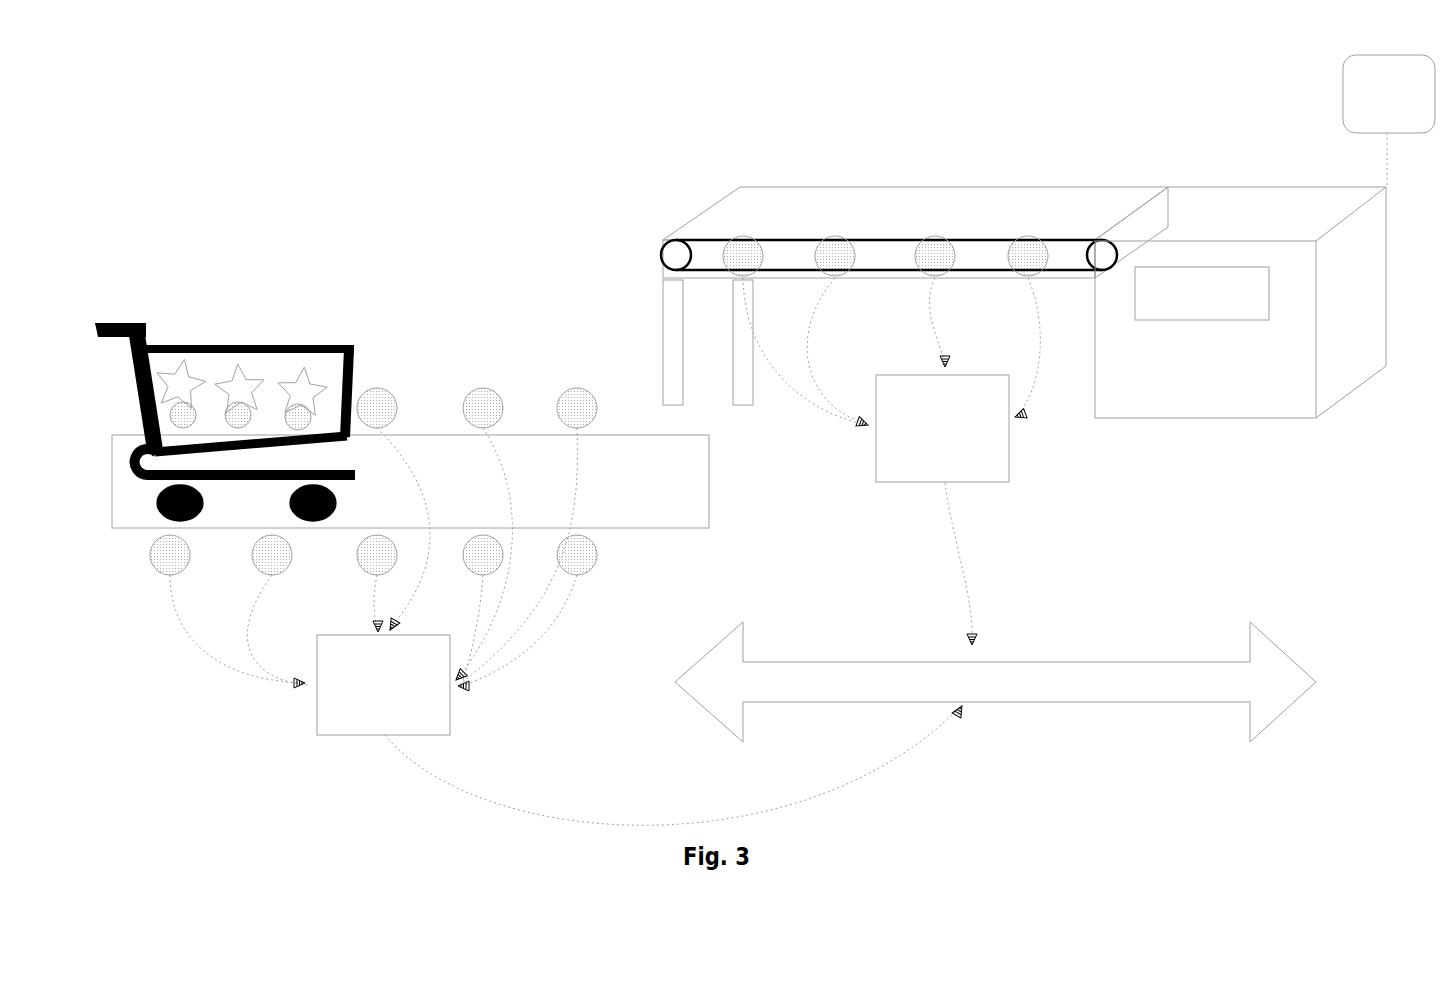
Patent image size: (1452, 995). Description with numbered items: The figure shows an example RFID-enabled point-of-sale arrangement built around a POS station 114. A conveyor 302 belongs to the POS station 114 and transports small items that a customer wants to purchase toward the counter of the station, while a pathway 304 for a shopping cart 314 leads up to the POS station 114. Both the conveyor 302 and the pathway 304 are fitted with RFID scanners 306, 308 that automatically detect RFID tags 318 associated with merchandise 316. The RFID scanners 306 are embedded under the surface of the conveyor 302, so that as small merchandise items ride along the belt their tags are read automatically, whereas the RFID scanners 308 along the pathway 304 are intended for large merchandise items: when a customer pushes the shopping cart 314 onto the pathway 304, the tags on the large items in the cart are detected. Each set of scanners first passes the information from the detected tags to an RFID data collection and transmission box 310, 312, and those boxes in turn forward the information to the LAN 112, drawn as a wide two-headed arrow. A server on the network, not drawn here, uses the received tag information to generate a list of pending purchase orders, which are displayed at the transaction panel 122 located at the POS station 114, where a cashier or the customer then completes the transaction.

The LAN 112 is at (850, 654).
The POS station 114 is at (1240, 347).
The transaction panel 122 is at (1396, 129).
The conveyor 302 is at (914, 226).
The pathway 304 is at (451, 481).
The RFID scanners 306 is at (885, 296).
The RFID scanners 308 is at (373, 438).
The RFID data collection and transmission box 310 is at (891, 380).
The RFID data collection and transmission box 312 is at (373, 581).
The shopping cart 314 is at (225, 378).
The merchandise 316 is at (267, 358).
The RFID tags 318 is at (235, 365).